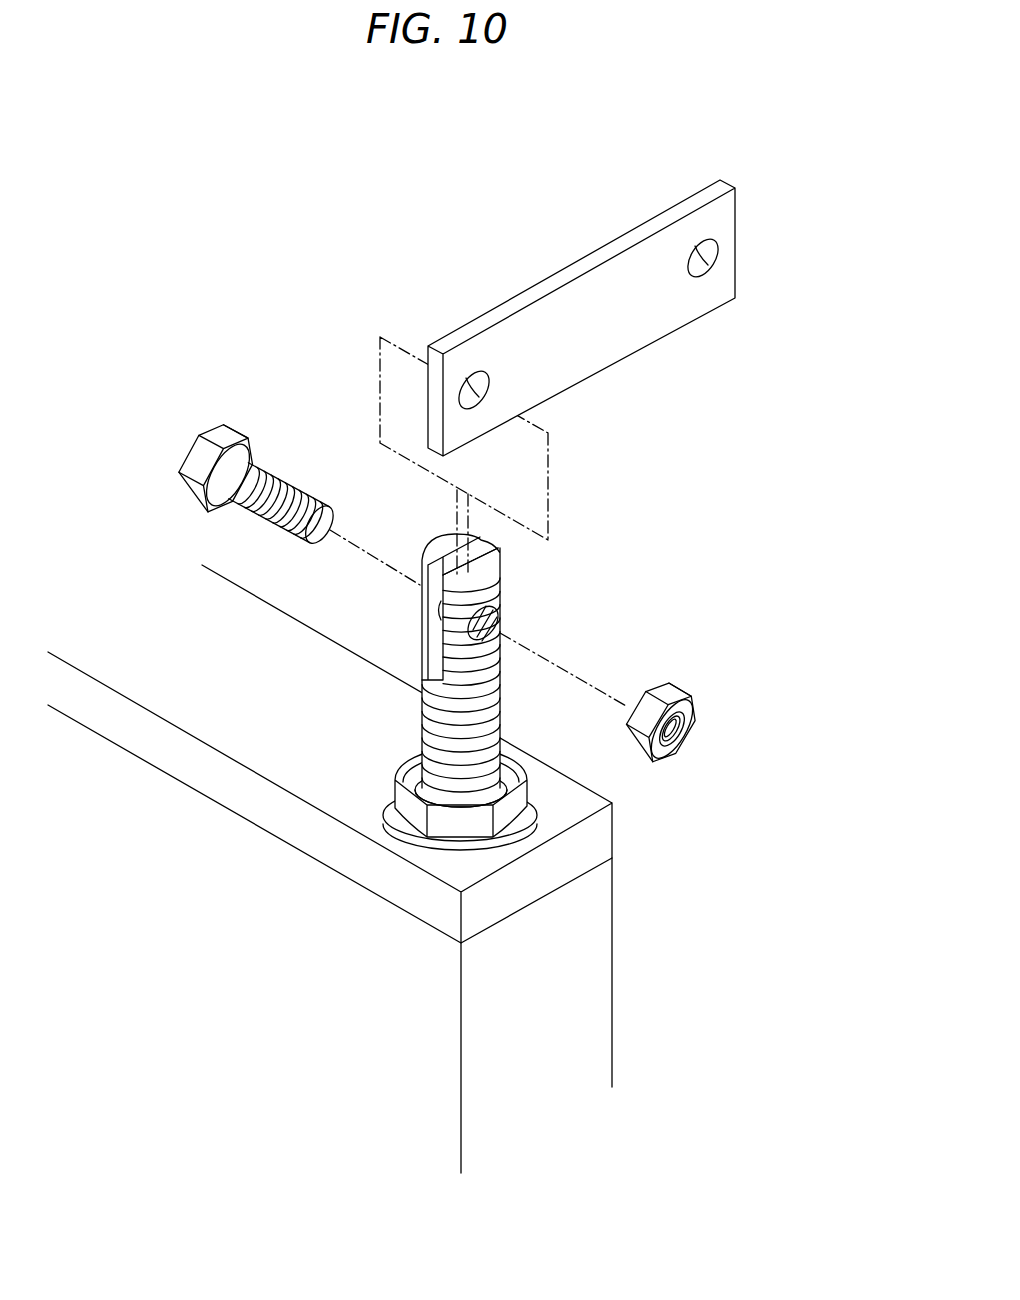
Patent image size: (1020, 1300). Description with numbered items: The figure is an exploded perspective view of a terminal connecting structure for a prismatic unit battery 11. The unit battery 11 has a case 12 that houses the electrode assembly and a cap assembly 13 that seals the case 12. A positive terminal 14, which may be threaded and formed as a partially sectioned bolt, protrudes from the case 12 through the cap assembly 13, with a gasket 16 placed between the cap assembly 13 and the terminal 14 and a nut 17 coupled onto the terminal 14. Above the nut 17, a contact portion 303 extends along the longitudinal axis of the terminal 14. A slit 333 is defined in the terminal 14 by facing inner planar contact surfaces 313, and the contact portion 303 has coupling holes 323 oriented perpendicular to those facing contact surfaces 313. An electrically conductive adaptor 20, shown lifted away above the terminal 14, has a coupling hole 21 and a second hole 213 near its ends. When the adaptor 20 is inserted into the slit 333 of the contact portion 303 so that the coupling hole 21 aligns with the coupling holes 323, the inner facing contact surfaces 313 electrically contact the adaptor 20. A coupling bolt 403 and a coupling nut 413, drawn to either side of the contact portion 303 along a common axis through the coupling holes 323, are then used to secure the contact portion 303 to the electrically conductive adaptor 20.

The unit battery 11 is at (388, 869).
The case 12 is at (568, 1017).
The cap assembly 13 is at (530, 882).
The positive terminal 14 is at (391, 662).
The gasket 16 is at (420, 842).
The nut 17 is at (413, 812).
The electrically conductive adaptor 20 is at (601, 304).
The coupling hole 21 is at (485, 378).
The coupling hole of bus bar 213 is at (706, 265).
The contact portion 303 is at (440, 548).
The inner planar contact surfaces 313 is at (423, 657).
The coupling holes 323 is at (435, 615).
The slit 333 is at (486, 538).
The coupling bolt 403 is at (293, 483).
The coupling nut 413 is at (685, 740).